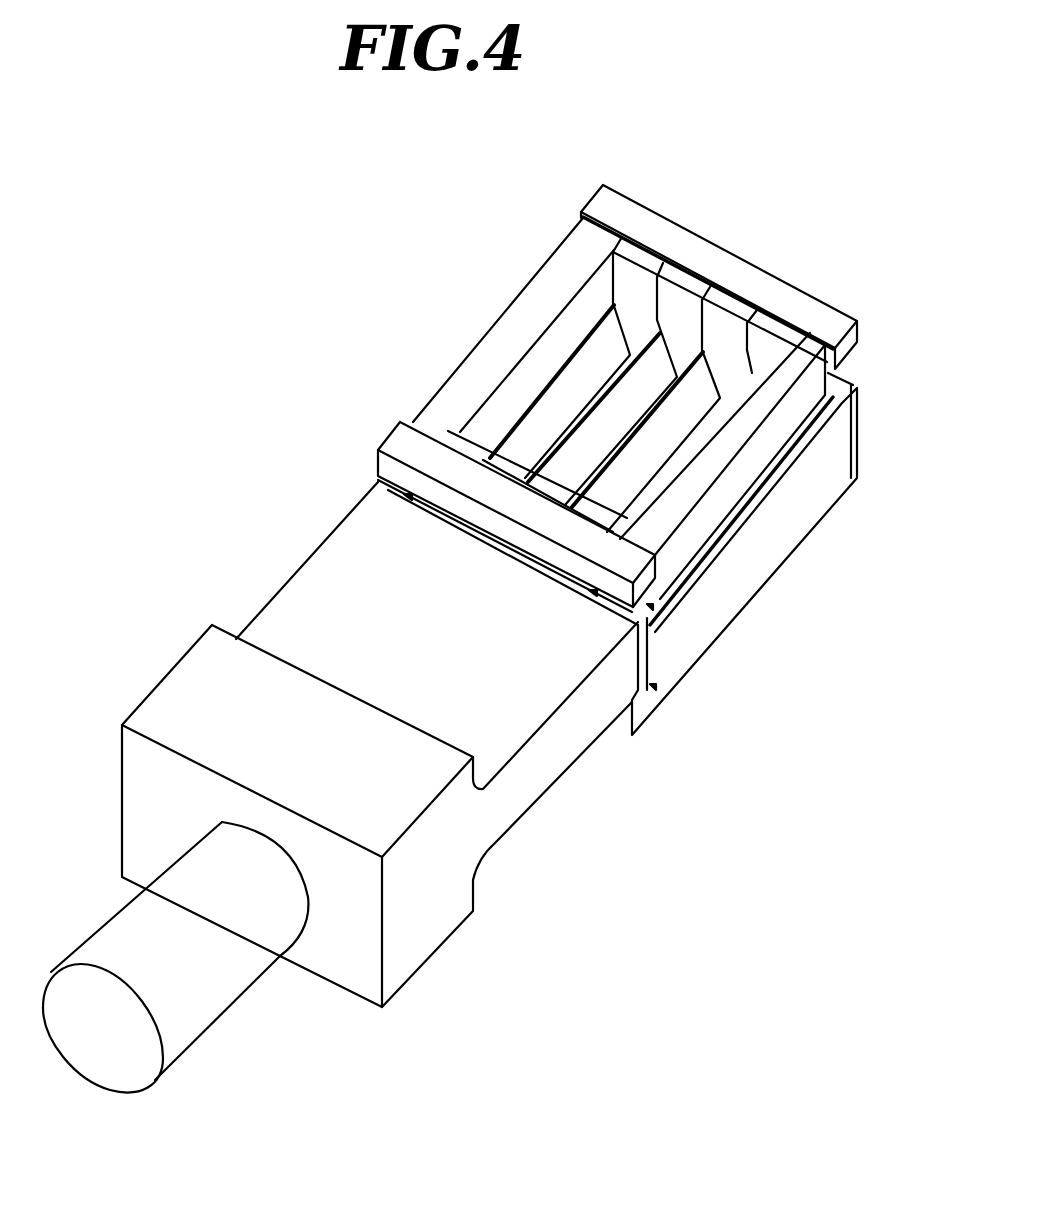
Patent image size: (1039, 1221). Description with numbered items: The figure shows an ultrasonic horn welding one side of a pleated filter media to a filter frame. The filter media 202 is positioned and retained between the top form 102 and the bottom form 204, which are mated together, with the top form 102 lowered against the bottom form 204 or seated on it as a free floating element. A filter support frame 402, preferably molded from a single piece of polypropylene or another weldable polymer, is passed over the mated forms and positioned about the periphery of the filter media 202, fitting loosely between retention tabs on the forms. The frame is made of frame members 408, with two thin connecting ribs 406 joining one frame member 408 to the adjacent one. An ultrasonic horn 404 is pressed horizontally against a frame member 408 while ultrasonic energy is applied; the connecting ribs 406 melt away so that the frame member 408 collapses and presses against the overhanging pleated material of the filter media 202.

The top form 102 is at (735, 262).
The filter media 202 is at (571, 392).
The bottom form 204 is at (855, 487).
The filter support frame 402 is at (378, 482).
The ultrasonic horn 404 is at (470, 823).
The connecting ribs 406 is at (653, 687).
The frame member 408 is at (852, 362).